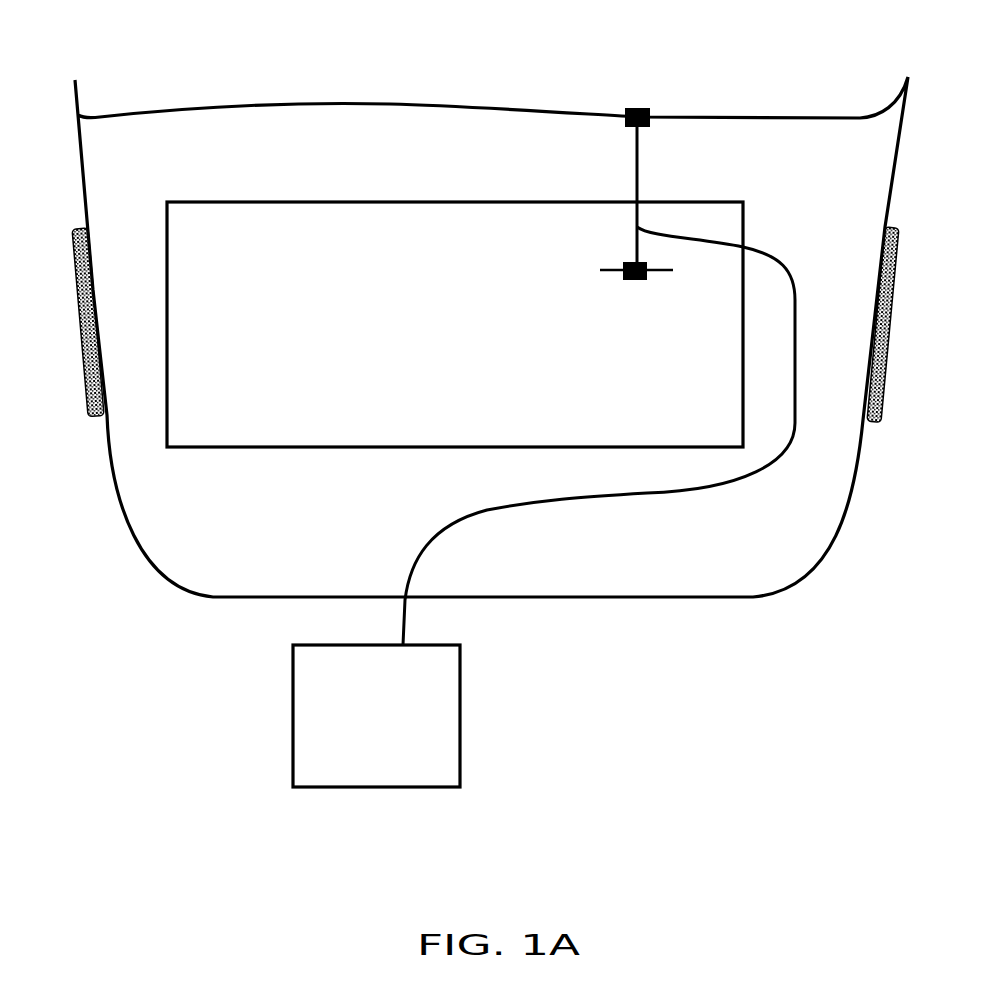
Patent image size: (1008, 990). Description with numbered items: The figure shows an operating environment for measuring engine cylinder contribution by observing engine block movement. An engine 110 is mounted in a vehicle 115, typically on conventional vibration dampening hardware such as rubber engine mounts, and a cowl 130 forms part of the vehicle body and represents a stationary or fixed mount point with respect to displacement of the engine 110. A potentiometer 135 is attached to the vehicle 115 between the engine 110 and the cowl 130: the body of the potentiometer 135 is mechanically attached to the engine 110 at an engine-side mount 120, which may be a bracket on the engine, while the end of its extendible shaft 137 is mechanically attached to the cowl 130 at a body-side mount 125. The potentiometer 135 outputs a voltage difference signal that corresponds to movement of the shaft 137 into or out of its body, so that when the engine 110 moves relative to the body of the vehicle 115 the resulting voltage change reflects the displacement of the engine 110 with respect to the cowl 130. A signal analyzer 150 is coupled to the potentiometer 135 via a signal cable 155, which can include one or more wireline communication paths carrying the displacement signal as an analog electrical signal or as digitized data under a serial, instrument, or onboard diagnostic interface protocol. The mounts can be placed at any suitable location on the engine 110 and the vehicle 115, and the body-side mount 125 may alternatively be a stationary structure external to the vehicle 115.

The engine 110 is at (347, 357).
The vehicle 115 is at (128, 562).
The engine-side mount 120 is at (620, 277).
The body-side mount 125 is at (633, 108).
The cowl 130 is at (185, 105).
The potentiometer 135 is at (627, 267).
The shaft 137 is at (637, 160).
The signal analyzer 150 is at (397, 764).
The signal cable 155 is at (540, 505).